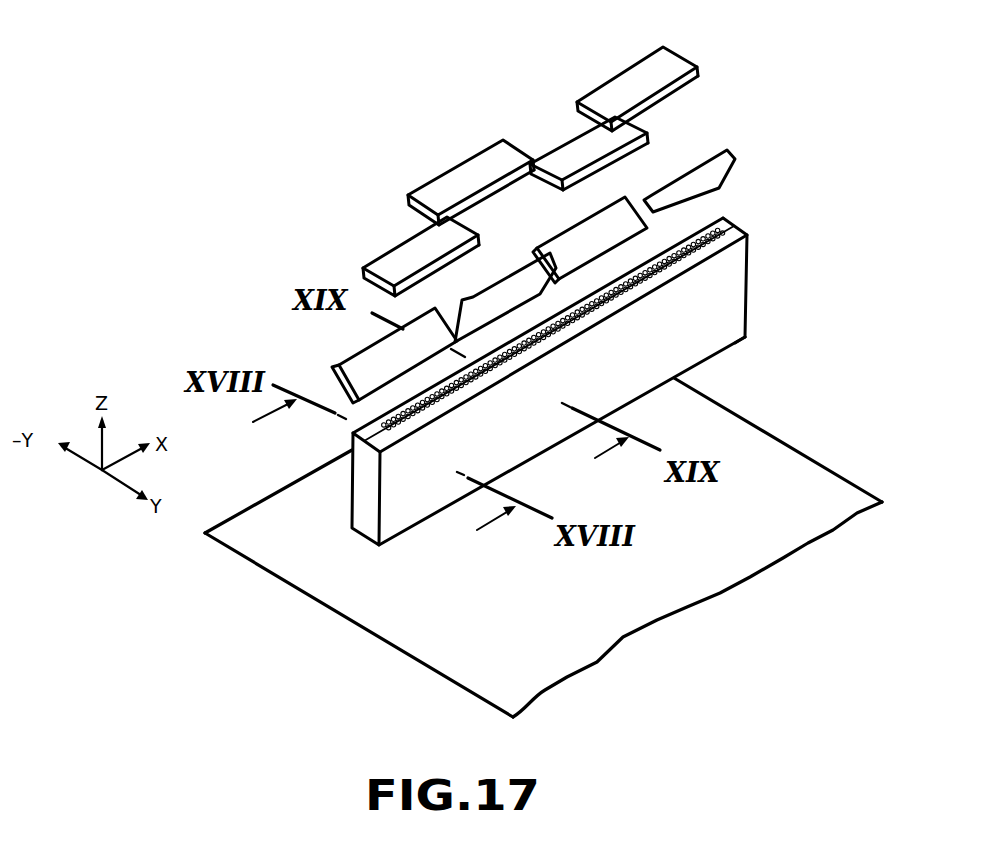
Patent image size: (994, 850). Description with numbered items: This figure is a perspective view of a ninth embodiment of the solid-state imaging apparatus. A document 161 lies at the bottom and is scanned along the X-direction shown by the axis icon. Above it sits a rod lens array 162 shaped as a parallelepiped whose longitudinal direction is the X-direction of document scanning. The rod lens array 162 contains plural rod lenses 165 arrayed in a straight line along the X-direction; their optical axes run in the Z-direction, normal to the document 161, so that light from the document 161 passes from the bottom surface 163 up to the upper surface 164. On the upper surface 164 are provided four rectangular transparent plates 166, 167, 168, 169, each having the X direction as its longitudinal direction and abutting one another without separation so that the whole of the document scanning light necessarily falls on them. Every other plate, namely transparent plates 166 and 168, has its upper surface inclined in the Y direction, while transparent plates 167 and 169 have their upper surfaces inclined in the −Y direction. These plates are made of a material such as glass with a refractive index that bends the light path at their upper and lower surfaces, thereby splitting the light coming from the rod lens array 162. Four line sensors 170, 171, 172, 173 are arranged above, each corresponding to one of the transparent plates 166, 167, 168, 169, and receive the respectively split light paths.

The document 161 is at (797, 452).
The rod lens array 162 is at (589, 372).
The bottom surface 163 is at (730, 346).
The upper surface 164 is at (747, 236).
The rod lens 165 is at (730, 222).
The transparent plate 166 is at (350, 358).
The transparent plate 167 is at (502, 297).
The transparent plate 168 is at (605, 217).
The transparent plate 169 is at (714, 174).
The line sensor 170 is at (380, 263).
The line sensor 171 is at (472, 180).
The line sensor 172 is at (573, 148).
The line sensor 173 is at (622, 90).